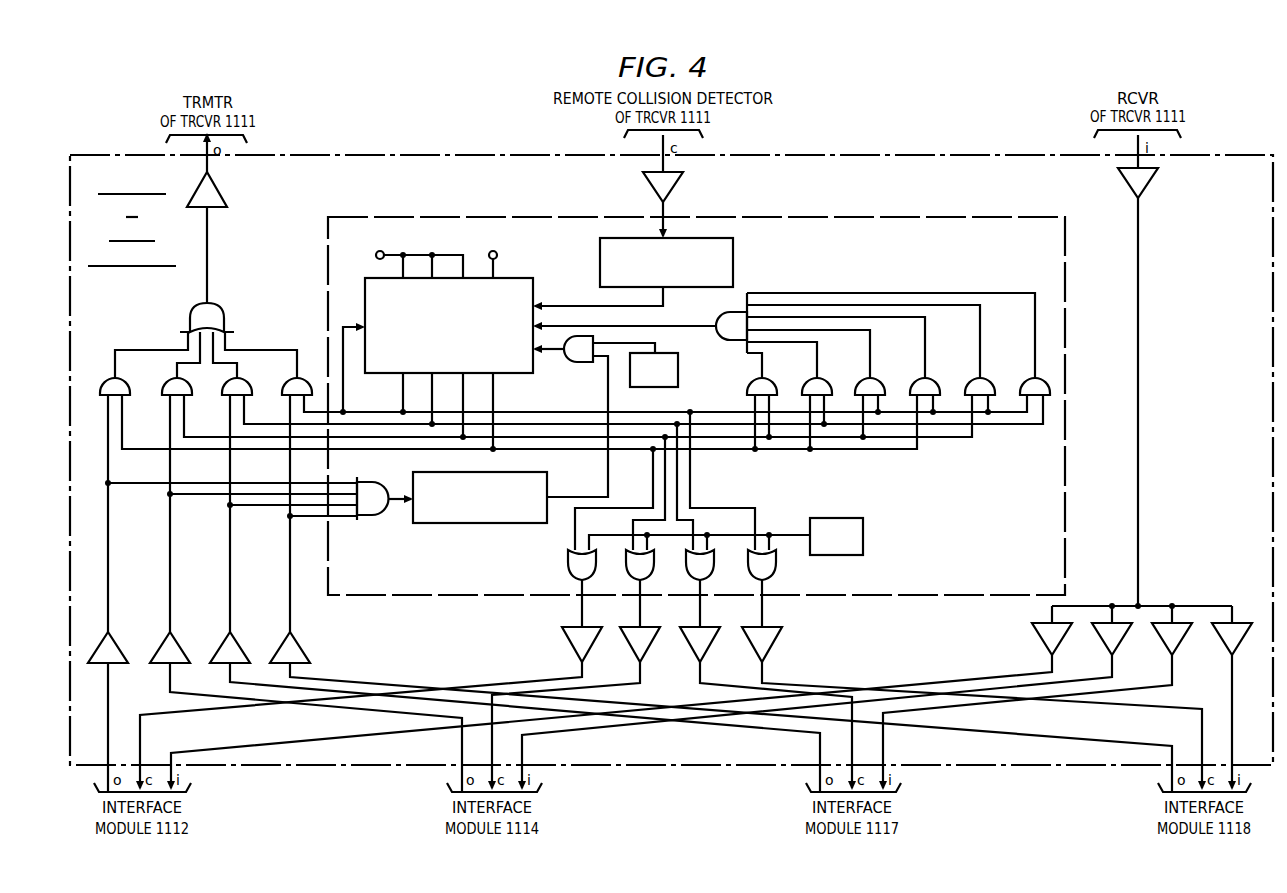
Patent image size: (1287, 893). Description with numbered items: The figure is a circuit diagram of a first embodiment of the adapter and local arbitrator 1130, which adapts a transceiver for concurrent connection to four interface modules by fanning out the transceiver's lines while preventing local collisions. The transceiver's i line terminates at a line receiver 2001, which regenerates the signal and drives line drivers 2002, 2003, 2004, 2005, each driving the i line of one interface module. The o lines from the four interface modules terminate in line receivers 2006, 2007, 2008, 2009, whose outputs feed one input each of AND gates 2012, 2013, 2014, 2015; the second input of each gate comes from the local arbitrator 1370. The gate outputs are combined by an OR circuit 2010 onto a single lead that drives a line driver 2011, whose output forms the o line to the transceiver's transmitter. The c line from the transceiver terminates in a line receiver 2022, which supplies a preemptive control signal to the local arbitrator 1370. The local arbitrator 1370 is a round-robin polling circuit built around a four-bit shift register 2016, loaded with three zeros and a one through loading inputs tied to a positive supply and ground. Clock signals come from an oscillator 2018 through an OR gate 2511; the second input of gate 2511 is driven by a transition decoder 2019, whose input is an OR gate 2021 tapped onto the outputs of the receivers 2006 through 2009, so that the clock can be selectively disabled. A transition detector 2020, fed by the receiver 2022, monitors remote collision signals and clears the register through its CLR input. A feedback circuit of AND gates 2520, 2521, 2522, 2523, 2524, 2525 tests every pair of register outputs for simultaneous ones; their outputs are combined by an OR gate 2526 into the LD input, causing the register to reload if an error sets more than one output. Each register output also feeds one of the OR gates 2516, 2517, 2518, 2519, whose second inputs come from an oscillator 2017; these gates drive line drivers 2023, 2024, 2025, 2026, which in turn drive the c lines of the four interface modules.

The adapter and local arbitrator 1130 is at (116, 158).
The local arbitrator 1370 is at (372, 217).
The line receiver 2001 is at (1156, 185).
The line driver 2002 is at (1035, 638).
The line driver 2003 is at (1095, 638).
The line driver 2004 is at (1155, 638).
The line driver 2005 is at (1215, 638).
The line receiver 2006 is at (130, 650).
The line receiver 2007 is at (192, 650).
The line receiver 2008 is at (252, 650).
The line receiver 2009 is at (312, 650).
The OR circuit 2010 is at (218, 310).
The line driver 2011 is at (228, 198).
The AND gate 2012 is at (127, 398).
The AND gate 2013 is at (164, 382).
The AND gate 2014 is at (225, 398).
The AND gate 2015 is at (285, 382).
The four-bit shift register 2016 is at (535, 282).
The oscillator 2017 is at (830, 518).
The oscillator 2018 is at (679, 380).
The transition decoder 2019 is at (458, 523).
The transition detector 2020 is at (733, 257).
The OR gate 2021 is at (367, 483).
The line receiver 2022 is at (680, 186).
The line driver 2023 is at (565, 640).
The line driver 2024 is at (623, 640).
The line driver 2025 is at (683, 640).
The line driver 2026 is at (745, 640).
The OR gate 2511 is at (582, 364).
The OR gate 2516 is at (596, 574).
The OR gate 2517 is at (654, 574).
The OR gate 2518 is at (714, 574).
The OR gate 2519 is at (776, 574).
The AND gate 2520 is at (746, 382).
The AND gate 2521 is at (802, 382).
The AND gate 2522 is at (855, 382).
The AND gate 2523 is at (910, 382).
The AND gate 2524 is at (965, 382).
The AND gate 2525 is at (1020, 382).
The OR gate 2526 is at (726, 312).